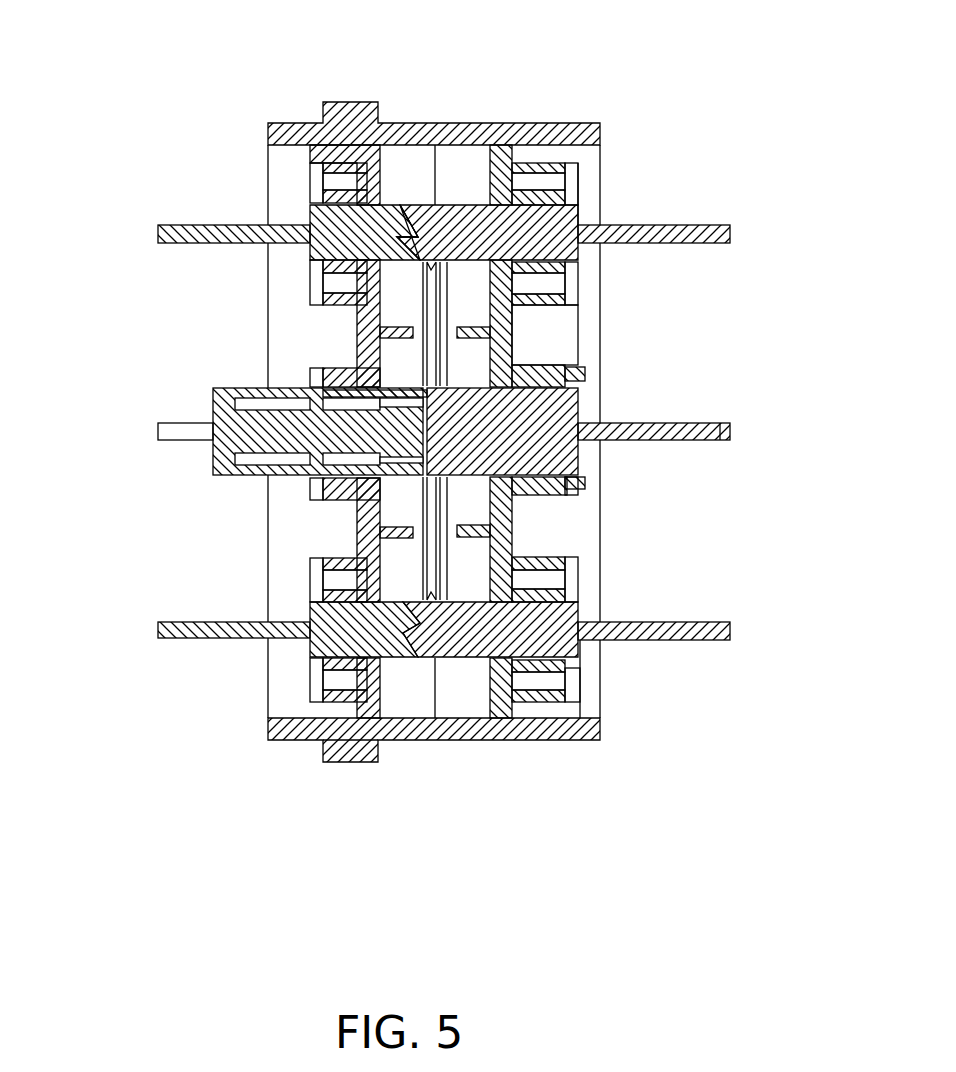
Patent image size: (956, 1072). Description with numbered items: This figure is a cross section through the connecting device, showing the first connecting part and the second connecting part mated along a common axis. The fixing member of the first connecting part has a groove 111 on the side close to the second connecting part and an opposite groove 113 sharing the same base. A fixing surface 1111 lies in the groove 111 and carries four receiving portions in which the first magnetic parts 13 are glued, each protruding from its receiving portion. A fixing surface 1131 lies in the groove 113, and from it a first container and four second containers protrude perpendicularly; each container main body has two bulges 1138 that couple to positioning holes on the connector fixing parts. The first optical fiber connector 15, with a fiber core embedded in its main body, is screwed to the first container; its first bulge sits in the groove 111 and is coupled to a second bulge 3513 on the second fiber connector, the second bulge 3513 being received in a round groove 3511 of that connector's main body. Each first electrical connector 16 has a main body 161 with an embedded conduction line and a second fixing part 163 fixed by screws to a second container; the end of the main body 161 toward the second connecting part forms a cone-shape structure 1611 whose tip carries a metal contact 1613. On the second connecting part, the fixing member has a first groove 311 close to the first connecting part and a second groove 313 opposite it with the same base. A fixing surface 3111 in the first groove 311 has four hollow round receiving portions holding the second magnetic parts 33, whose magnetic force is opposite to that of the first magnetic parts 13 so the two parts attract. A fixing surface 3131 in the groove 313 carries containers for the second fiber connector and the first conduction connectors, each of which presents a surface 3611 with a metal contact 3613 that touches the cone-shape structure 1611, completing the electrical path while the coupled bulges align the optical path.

The first groove 311 is at (400, 175).
The second groove 313 is at (293, 185).
The groove 111 is at (458, 170).
The fixing surface 1111 is at (467, 687).
The fixing surface 3111 is at (380, 690).
The metal contact 3613 is at (345, 180).
The surface 3611 is at (418, 204).
The second magnetic part 33 is at (427, 293).
The fixing surface 3131 is at (357, 347).
The round groove 3511 is at (332, 402).
The fixing surface 1131 is at (515, 338).
The bulge 1138 is at (582, 377).
The groove 113 is at (539, 527).
The second fixing part 163 is at (580, 166).
The cone-shape structure 1611 is at (518, 672).
The first electrical connector 16 is at (467, 430).
The main body 161 is at (537, 230).
The metal contact 1613 is at (417, 636).
The second bulge 3513 is at (407, 428).
The first optical fiber connector 15 is at (545, 425).
The first magnetic part 13 is at (445, 308).